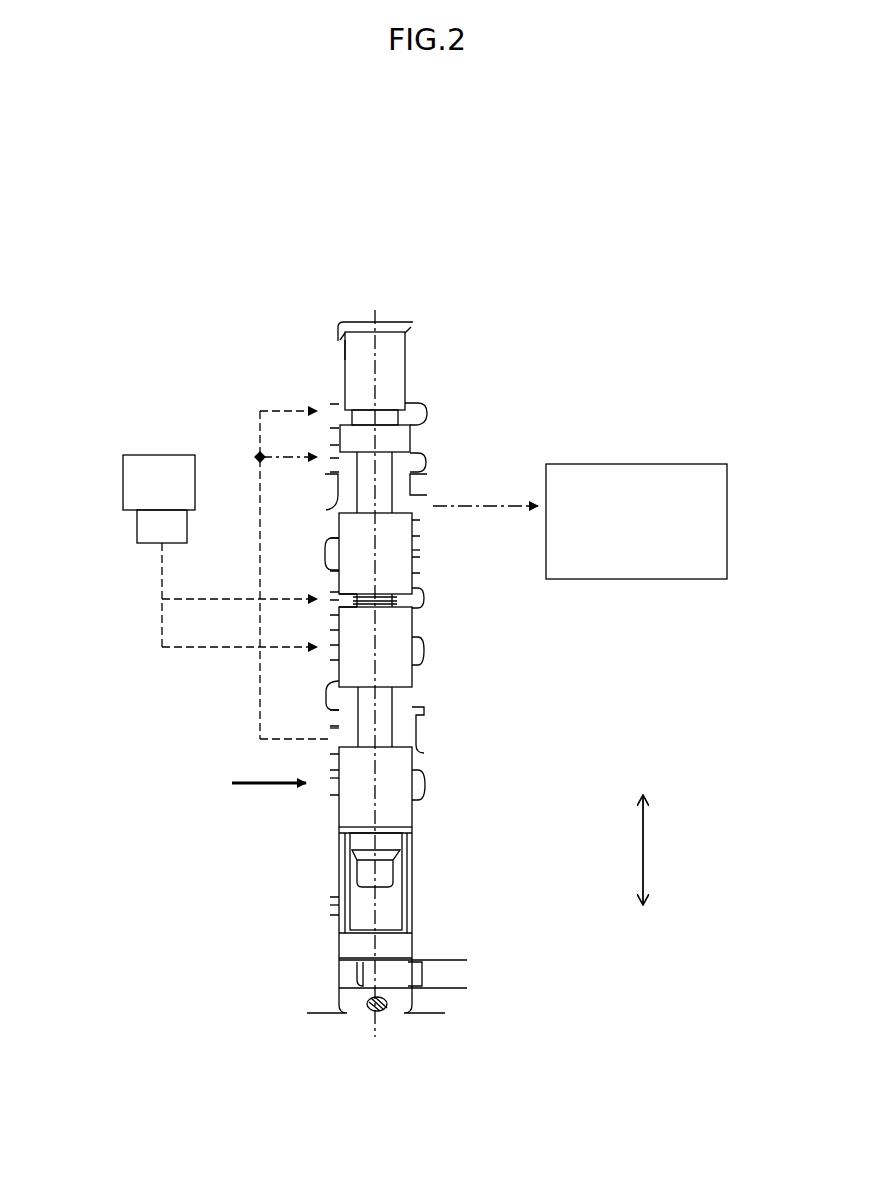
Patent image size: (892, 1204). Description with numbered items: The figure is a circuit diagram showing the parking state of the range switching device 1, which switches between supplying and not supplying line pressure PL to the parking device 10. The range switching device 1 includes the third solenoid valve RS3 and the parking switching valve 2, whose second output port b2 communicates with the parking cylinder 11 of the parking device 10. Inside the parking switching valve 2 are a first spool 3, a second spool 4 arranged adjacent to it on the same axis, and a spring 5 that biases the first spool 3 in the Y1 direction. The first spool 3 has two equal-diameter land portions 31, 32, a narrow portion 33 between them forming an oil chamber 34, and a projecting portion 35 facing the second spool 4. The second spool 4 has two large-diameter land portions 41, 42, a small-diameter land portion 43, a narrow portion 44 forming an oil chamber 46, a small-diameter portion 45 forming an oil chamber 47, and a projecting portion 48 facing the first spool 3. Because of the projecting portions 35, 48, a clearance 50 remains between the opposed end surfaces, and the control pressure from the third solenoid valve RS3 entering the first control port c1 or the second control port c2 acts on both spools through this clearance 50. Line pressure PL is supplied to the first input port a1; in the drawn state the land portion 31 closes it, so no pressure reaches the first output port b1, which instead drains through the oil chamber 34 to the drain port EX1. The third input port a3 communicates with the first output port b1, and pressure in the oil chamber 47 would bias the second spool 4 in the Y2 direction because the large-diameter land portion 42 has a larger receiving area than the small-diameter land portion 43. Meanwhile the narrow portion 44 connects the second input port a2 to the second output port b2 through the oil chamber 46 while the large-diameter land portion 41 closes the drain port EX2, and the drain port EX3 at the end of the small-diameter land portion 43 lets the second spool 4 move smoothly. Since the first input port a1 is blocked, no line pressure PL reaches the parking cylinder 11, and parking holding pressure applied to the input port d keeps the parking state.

The range switching device 1 is at (291, 247).
The parking switching valve 2 is at (426, 298).
The first spool 3 is at (392, 815).
The second spool 4 is at (396, 364).
The spring 5 is at (408, 891).
The parking device 10 is at (648, 417).
The parking cylinder 11 is at (700, 464).
The land portion 31 is at (412, 766).
The land portion 32 is at (412, 640).
The narrow portion 33 is at (392, 717).
The oil chamber 34 is at (331, 706).
The projecting portion 35 is at (393, 598).
The large-diameter land portion 41 is at (412, 526).
The large-diameter land portion 42 is at (410, 441).
The small-diameter land portion 43 is at (406, 352).
The narrow portion 44 is at (426, 460).
The small-diameter portion 45 is at (396, 415).
The oil chamber 46 is at (327, 506).
The oil chamber 47 is at (427, 413).
The projecting portion 48 is at (388, 594).
The clearance 50 is at (357, 599).
The drain port EX1 is at (420, 694).
The drain port EX2 is at (418, 556).
The drain port EX3 is at (413, 334).
The third solenoid valve RS3 is at (142, 454).
The first input port a1 is at (328, 777).
The second input port a2 is at (328, 453).
The third input port a3 is at (328, 405).
The first output port b1 is at (328, 727).
The second output port b2 is at (427, 496).
The first control port c1 is at (328, 593).
The second control port c2 is at (328, 653).
The input port d is at (326, 906).
The line pressure PL is at (252, 788).
The first direction Y1 is at (644, 834).
The Y2 direction Y2 is at (644, 867).